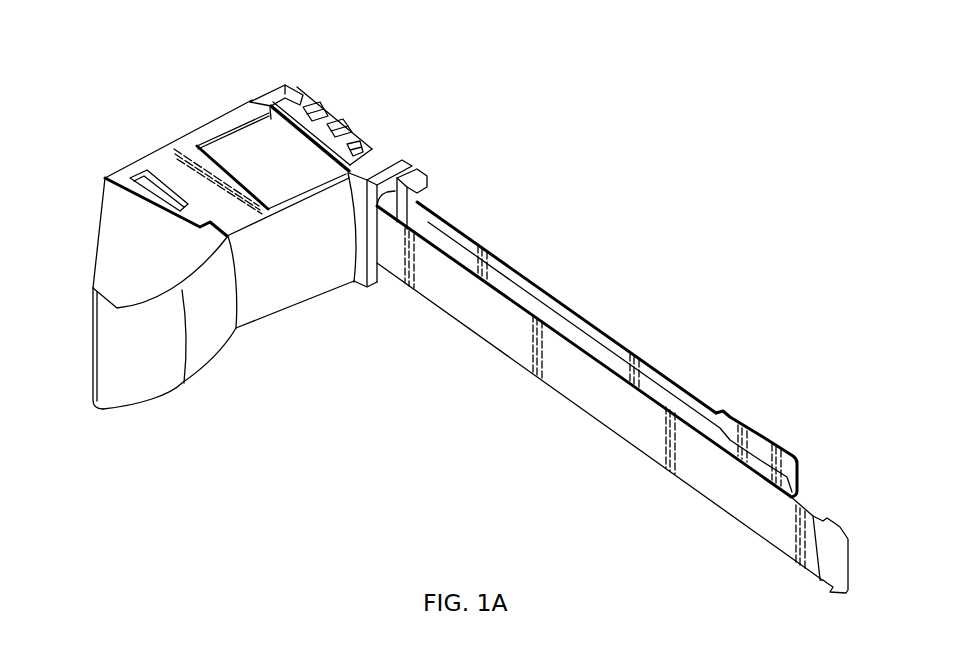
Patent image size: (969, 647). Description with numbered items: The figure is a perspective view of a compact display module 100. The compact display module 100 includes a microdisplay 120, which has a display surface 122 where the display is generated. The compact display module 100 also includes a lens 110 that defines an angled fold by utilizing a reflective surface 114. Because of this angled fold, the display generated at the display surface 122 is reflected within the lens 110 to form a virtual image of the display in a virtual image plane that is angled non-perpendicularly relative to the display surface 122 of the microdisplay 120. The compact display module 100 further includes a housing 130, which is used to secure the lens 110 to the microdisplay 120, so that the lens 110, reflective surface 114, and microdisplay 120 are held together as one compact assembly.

The compact display module 100 is at (201, 66).
The lens 110 is at (115, 236).
The reflective surface 114 is at (92, 290).
The microdisplay 120 is at (360, 147).
The display surface 122 is at (355, 284).
The housing 130 is at (237, 330).